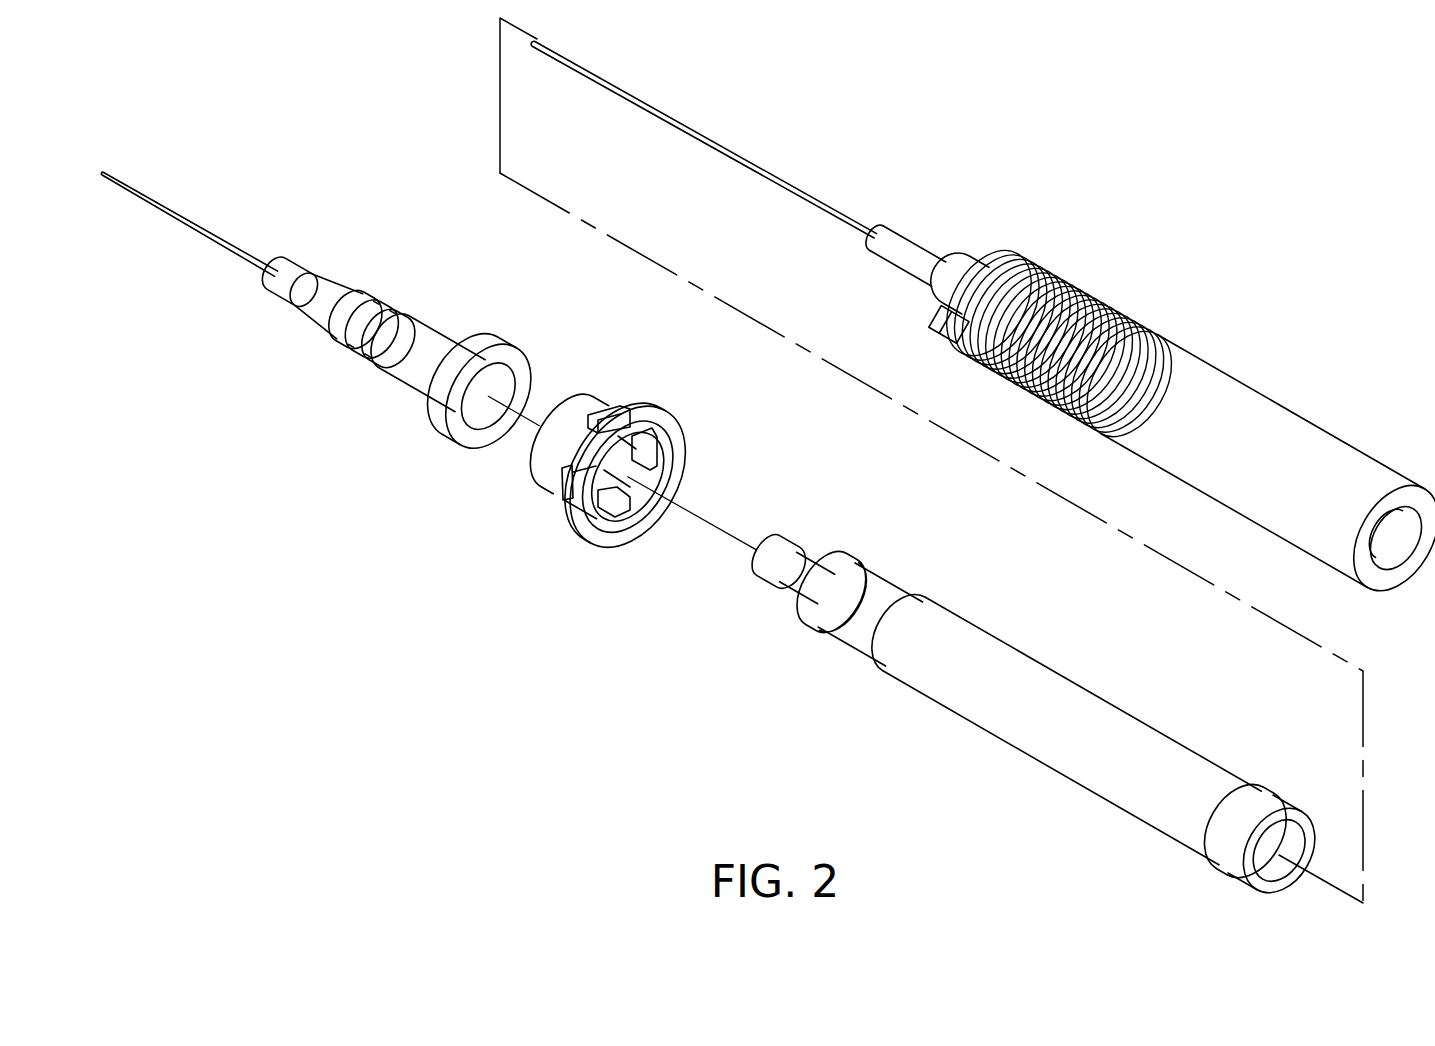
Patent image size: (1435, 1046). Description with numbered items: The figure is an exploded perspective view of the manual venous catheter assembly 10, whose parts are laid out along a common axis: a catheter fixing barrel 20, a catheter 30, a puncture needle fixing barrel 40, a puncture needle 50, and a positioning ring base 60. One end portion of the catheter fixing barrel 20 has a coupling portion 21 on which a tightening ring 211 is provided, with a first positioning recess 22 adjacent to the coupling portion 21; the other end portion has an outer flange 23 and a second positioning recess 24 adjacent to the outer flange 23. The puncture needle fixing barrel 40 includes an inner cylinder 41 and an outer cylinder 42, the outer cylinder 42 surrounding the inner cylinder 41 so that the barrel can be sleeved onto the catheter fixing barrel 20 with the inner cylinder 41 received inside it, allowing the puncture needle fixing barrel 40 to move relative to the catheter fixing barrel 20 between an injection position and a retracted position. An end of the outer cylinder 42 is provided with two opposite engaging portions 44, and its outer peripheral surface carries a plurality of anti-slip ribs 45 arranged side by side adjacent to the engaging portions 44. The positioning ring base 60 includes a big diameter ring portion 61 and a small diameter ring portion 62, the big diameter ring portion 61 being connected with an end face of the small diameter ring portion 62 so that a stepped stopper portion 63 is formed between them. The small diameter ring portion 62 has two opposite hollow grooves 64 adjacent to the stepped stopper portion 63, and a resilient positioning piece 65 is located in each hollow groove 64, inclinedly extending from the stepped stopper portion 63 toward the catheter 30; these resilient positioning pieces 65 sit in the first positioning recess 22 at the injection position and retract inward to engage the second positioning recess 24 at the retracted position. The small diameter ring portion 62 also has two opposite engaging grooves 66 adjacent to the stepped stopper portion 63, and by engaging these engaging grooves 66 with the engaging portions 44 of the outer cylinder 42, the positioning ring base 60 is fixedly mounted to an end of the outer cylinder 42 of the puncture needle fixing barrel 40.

The manual venous catheter assembly 10 is at (450, 673).
The catheter fixing barrel 20 is at (942, 757).
The coupling portion 21 is at (784, 578).
The tightening ring 211 is at (815, 548).
The first positioning recess 22 is at (858, 627).
The outer flange 23 is at (1277, 815).
The second positioning recess 24 is at (1233, 812).
The catheter 30 is at (360, 404).
The puncture needle fixing barrel 40 is at (1235, 350).
The inner cylinder 41 is at (960, 272).
The outer cylinder 42 is at (1258, 432).
The engaging portions 44 is at (938, 330).
The anti-slip ribs 45 is at (1096, 300).
The puncture needle 50 is at (722, 150).
The positioning ring base 60 is at (556, 550).
The big diameter ring portion 61 is at (677, 479).
The small diameter ring portion 62 is at (545, 452).
The stepped stopper portion 63 is at (606, 528).
The hollow grooves 64 is at (601, 403).
The resilient positioning pieces 65 is at (622, 417).
The engaging grooves 66 is at (660, 457).